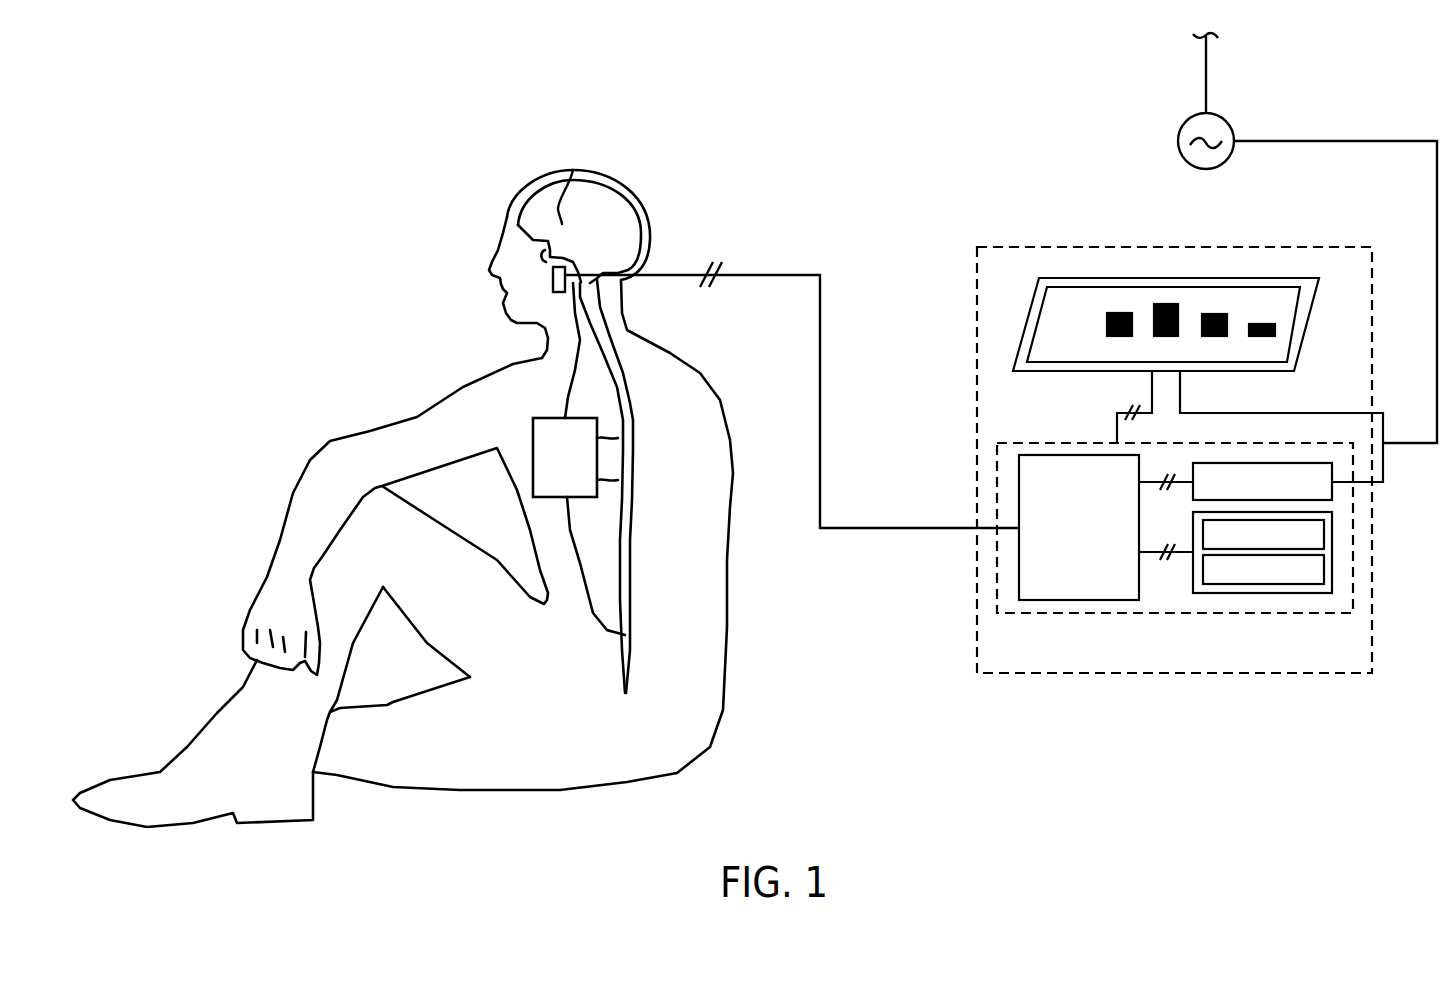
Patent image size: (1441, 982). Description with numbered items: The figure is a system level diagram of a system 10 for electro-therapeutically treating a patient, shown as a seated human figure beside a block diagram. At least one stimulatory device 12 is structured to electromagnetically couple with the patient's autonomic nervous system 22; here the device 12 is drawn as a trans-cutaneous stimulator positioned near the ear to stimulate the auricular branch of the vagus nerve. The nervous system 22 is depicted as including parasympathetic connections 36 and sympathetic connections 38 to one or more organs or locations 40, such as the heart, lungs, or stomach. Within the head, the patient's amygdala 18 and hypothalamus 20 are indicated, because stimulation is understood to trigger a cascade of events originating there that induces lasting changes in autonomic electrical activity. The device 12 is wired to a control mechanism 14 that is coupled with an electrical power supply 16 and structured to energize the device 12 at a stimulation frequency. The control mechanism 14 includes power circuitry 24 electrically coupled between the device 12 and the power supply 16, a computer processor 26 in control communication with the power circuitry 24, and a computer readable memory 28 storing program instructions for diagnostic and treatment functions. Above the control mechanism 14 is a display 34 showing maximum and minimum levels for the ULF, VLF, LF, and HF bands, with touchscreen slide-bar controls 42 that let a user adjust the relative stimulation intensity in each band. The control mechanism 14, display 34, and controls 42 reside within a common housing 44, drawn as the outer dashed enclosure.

The system 10 is at (972, 128).
The stimulatory device 12 is at (552, 274).
The control mechanism 14 is at (1167, 614).
The electrical power supply 16 is at (1178, 131).
The amygdala 18 is at (533, 212).
The hypothalamus 20 is at (573, 178).
The autonomic nervous system 22 is at (637, 391).
The power circuitry 24 is at (1319, 463).
The computer processor 26 is at (1072, 601).
The computer readable memory 28 is at (1262, 594).
The display 34 is at (1198, 365).
The parasympathetic connections 36 is at (566, 400).
The sympathetic connections 38 is at (613, 437).
The organs or locations 40 is at (555, 499).
The controls 42 is at (1201, 306).
The common housing 44 is at (977, 318).